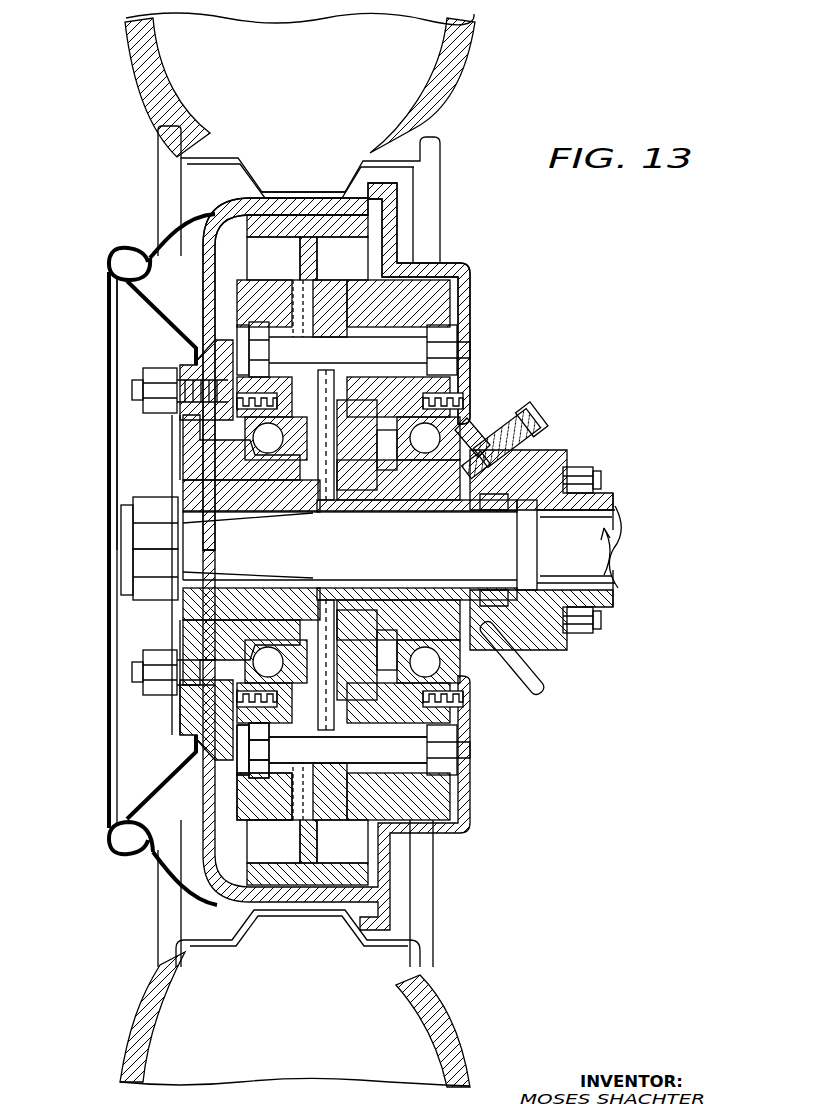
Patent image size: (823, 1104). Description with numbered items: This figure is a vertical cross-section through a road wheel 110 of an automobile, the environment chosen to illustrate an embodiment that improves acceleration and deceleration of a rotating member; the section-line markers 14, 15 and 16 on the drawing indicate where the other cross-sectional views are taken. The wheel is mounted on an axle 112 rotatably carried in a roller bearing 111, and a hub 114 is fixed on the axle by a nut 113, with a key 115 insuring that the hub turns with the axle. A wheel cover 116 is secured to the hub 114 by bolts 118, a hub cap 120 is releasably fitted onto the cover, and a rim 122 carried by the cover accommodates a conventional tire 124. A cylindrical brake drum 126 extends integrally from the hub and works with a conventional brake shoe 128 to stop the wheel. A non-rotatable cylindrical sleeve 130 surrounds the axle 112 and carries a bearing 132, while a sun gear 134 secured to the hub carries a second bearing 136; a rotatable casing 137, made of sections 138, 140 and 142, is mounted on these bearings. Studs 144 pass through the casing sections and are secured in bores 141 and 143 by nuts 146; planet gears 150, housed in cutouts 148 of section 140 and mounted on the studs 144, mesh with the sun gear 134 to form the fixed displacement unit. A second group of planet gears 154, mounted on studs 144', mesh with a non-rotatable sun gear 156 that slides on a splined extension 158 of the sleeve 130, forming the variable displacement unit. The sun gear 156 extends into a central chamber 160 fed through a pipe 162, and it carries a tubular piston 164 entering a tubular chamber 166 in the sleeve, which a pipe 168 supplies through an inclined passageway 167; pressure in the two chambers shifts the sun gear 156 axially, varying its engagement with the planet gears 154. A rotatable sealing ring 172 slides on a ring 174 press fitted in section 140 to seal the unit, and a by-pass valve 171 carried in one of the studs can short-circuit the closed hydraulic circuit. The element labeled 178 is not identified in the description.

The road wheel 110 is at (98, 570).
The roller bearing 111 is at (600, 621).
The axle 112 is at (500, 561).
The nut 113 is at (147, 588).
The hub 114 is at (185, 481).
The key 115 is at (133, 514).
The wheel cover 116 is at (178, 228).
The bolts 118 is at (155, 390).
The hub cap 120 is at (107, 539).
The rim 122 is at (166, 159).
The tire 124 is at (145, 77).
The brake drum 126 is at (330, 198).
The brake shoe 128 is at (303, 226).
The sleeve 130 is at (543, 433).
The bearing 132 is at (468, 416).
The sun gear 134 is at (250, 462).
The second bearing 136 is at (238, 409).
The rotatable casing 137 is at (233, 288).
The casing section 138 is at (258, 297).
The casing section 140 is at (368, 280).
The bore 141 is at (193, 354).
The casing section 142 is at (462, 285).
The bore 143 is at (458, 370).
The studs 144 is at (379, 339).
The second group of studs 144' is at (379, 750).
The nuts 146 is at (440, 357).
The cutouts 148 is at (287, 305).
The planet gears 150 is at (200, 332).
The planet gears 154 is at (380, 752).
The sun gear 156 is at (381, 425).
The splined extension 158 is at (345, 586).
The central chamber 160 is at (358, 482).
The pipe 162 is at (542, 680).
The tubular piston 164 is at (467, 597).
The tubular chamber 166 is at (482, 578).
The inclined passageway 167 is at (471, 447).
The pipe 168 is at (534, 410).
The by-pass valve 171 is at (285, 769).
The sealing ring 172 is at (427, 746).
The ring 174 is at (267, 707).
The cover 178 is at (472, 268).
The section line 14- 14 is at (357, 275).
The section line 15- 15 is at (305, 140).
The section line 16- 16 is at (333, 648).